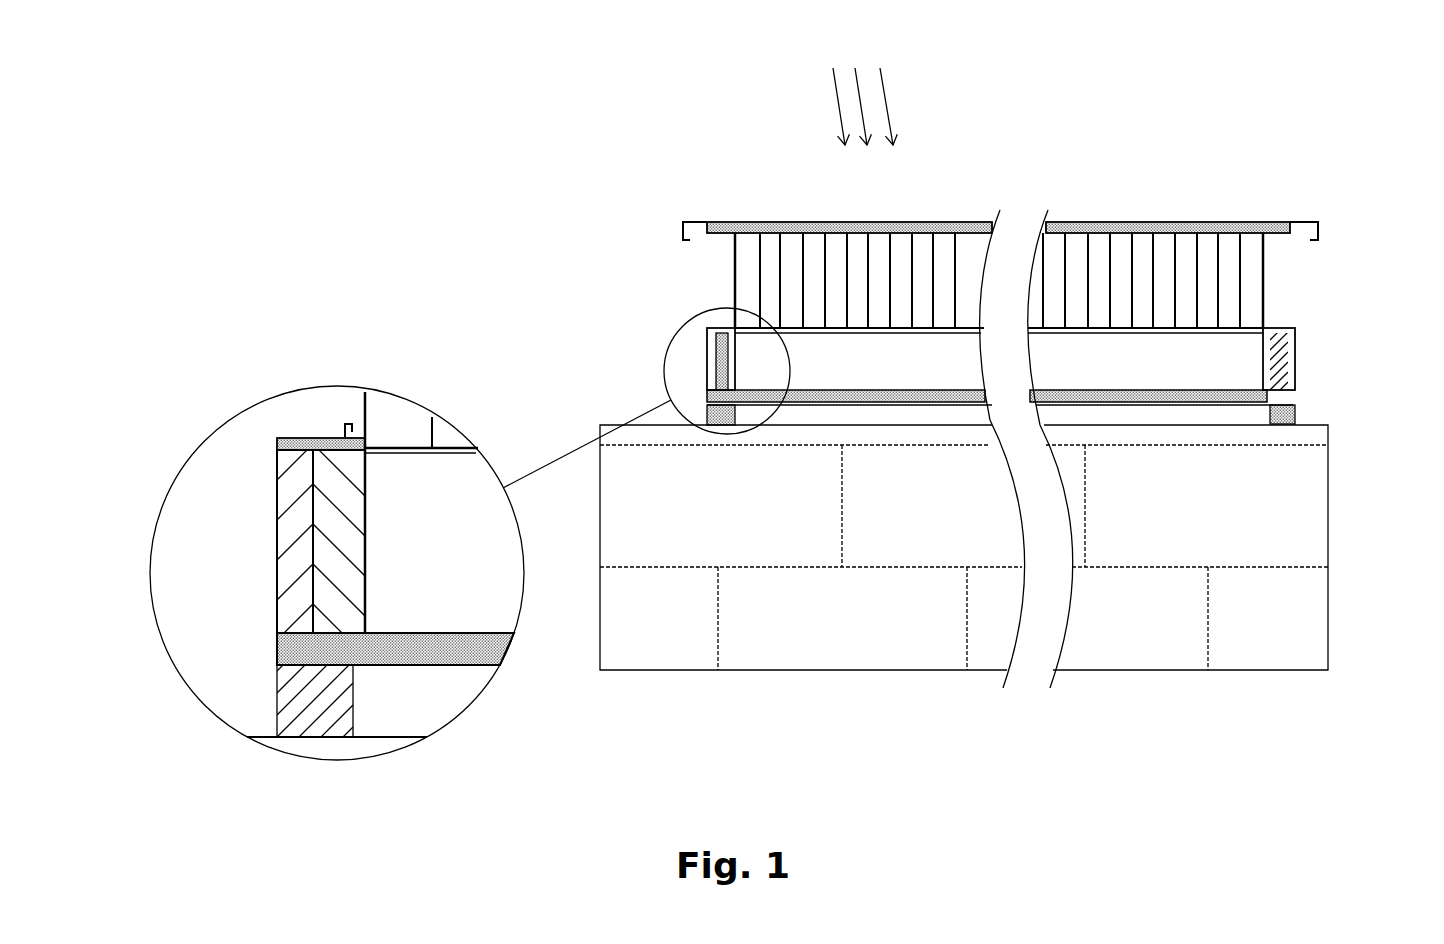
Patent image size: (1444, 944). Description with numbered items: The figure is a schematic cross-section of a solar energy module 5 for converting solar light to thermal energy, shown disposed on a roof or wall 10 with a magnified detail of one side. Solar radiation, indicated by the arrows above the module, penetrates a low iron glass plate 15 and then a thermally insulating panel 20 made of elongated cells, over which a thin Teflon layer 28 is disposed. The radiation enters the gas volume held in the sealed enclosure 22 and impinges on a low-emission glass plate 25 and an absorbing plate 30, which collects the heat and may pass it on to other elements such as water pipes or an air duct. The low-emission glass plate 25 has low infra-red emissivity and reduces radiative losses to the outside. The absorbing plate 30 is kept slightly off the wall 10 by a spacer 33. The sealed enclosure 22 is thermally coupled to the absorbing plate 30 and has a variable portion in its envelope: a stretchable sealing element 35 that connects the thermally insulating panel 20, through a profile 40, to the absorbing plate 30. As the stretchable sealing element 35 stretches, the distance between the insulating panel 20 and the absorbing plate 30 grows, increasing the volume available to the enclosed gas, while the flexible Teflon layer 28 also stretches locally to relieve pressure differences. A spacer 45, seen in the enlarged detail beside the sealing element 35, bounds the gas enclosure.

The solar energy module 5 is at (595, 215).
The roof or wall 10 is at (862, 617).
The low iron glass plate 15 is at (980, 223).
The thermally insulating panel 20 is at (1213, 253).
The sealed enclosure 22 is at (1060, 372).
The low-emission glass plate 25 is at (1208, 392).
The Teflon layer 28 is at (1142, 328).
The absorbing plate 30 is at (1168, 402).
The spacer 33 is at (1293, 408).
The stretchable sealing element 35 is at (715, 350).
The profile 40 is at (702, 218).
The spacer 45 is at (340, 550).